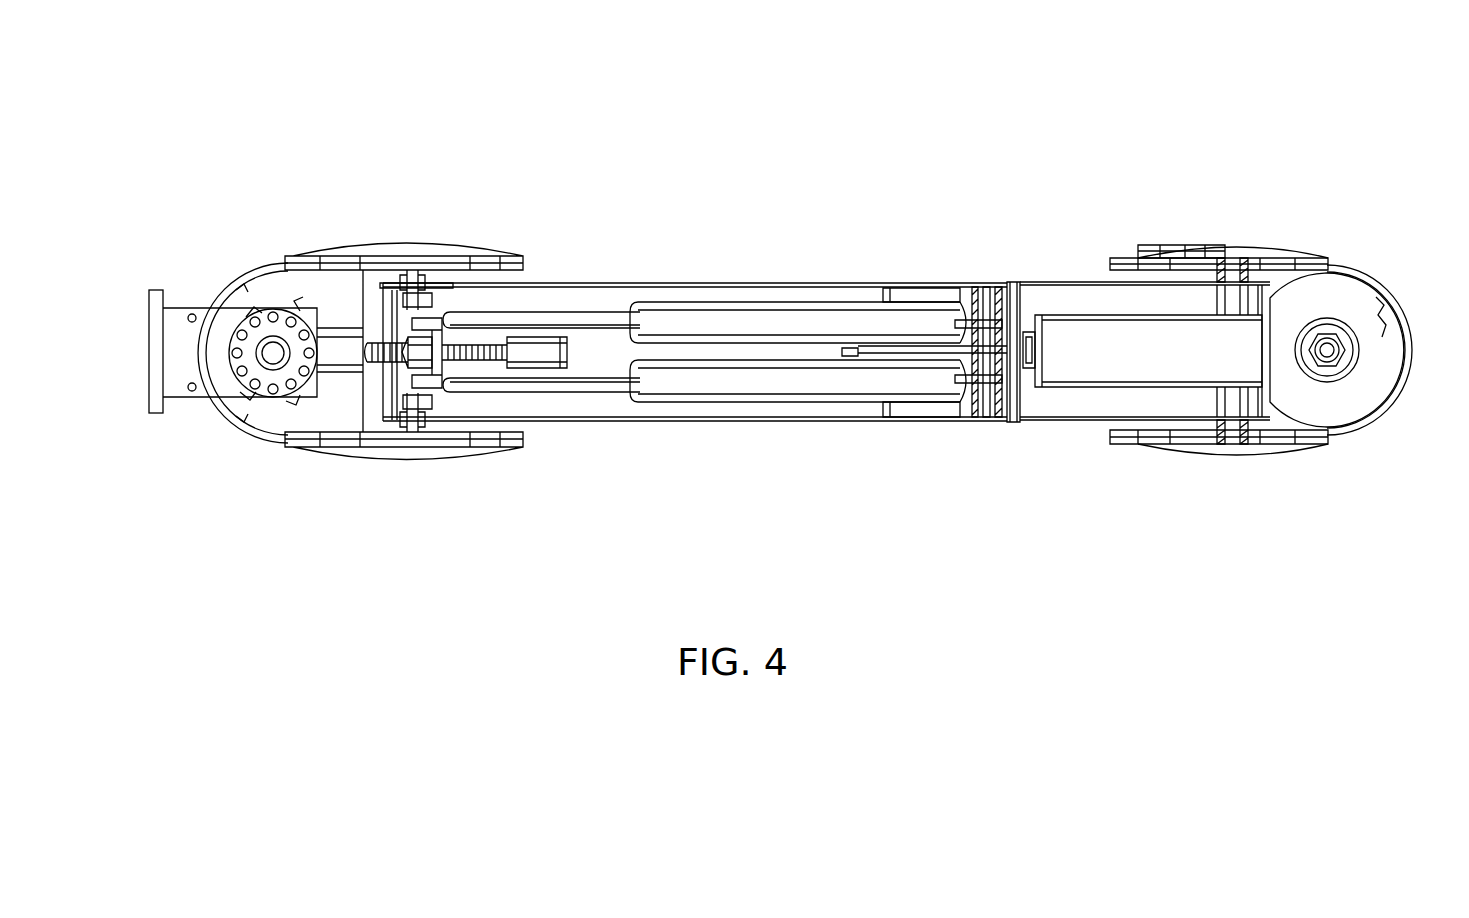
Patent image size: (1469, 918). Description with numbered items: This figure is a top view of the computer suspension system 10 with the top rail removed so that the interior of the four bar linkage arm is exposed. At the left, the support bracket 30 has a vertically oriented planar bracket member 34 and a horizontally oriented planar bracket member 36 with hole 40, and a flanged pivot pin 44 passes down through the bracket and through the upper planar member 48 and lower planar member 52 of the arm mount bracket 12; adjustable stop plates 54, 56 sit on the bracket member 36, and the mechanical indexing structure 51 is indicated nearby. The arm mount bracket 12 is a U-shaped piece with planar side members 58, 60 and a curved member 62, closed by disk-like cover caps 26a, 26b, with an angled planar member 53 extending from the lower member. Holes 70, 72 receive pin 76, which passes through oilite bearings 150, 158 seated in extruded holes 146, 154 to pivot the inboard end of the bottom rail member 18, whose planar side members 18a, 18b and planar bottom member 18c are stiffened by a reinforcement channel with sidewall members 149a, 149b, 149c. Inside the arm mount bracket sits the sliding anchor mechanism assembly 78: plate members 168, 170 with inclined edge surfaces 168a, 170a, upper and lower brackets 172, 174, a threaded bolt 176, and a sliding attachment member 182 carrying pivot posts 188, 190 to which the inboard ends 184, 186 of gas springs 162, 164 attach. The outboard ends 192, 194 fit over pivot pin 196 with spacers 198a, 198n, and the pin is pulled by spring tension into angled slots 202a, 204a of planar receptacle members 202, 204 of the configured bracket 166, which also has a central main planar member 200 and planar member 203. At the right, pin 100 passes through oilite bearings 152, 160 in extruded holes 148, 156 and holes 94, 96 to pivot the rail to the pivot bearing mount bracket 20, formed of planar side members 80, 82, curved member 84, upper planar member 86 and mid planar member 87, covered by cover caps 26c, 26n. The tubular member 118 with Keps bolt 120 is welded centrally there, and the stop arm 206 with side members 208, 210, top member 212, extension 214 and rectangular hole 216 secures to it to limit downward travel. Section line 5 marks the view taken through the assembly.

The section line 5 is at (1428, 353).
The computer suspension system 10 is at (1226, 52).
The arm mount bracket 12 is at (341, 135).
The bottom rail member 18 is at (714, 225).
The planar side member 18a is at (598, 420).
The planar side member 18b is at (572, 300).
The planar bottom member 18c is at (625, 310).
The pivot bearing mount bracket 20 is at (1347, 195).
The cover cap 26a is at (375, 447).
The cover cap 26b is at (345, 262).
The cover cap 26c is at (1280, 253).
The cover cap 26n is at (1283, 450).
The support bracket 30 is at (144, 452).
The planar bracket member 34 is at (158, 290).
The planar bracket member 36 is at (186, 300).
The hole 40 is at (262, 360).
The pivot pin 44 is at (270, 352).
The upper planar member 48 is at (232, 405).
The mechanical indexing structure 51 is at (232, 250).
The lower planar member 52 is at (237, 435).
The angled planar member 53 is at (360, 320).
The adjustable stop plate 54 is at (290, 305).
The adjustable stop plate 56 is at (283, 400).
The planar side member 58 is at (505, 395).
The planar side member 60 is at (522, 272).
The curved member 62 is at (245, 418).
The hole 70 is at (410, 432).
The hole 72 is at (415, 270).
The pin 76 is at (410, 290).
The sliding anchor mechanism assembly 78 is at (495, 302).
The planar side member 80 is at (1112, 437).
The planar side member 82 is at (1113, 268).
The curved member 84 is at (1382, 413).
The upper planar member 86 is at (1378, 302).
The mid planar member 87 is at (1352, 293).
The hole 94 is at (1240, 450).
The hole 96 is at (1238, 267).
The pin 100 is at (1232, 305).
The tubular member 118 is at (1357, 355).
The Keps bolt 120 is at (1332, 363).
The extruded hole 146 is at (393, 435).
The extruded hole 148 is at (1217, 388).
The planar sidewall member 149a is at (997, 400).
The planar sidewall member 149b is at (893, 292).
The planar sidewall member 149c is at (885, 400).
The oilite bearing 150 is at (405, 432).
The oilite bearing 152 is at (1217, 440).
The extruded hole 154 is at (435, 318).
The extruded hole 156 is at (1218, 290).
The oilite bearing 158 is at (430, 330).
The oilite bearing 160 is at (1218, 267).
The gas spring 162 is at (770, 385).
The gas spring 164 is at (790, 315).
The configured bracket 166 is at (1007, 260).
The plate member 168 is at (320, 380).
The inclined edge surface 168a is at (345, 370).
The plate member 170 is at (366, 337).
The inclined edge surface 170a is at (352, 300).
The upper bracket 172 is at (395, 400).
The lower bracket 174 is at (503, 340).
The threaded bolt 176 is at (460, 380).
The sliding attachment member 182 is at (445, 400).
The inboard end 184 is at (450, 405).
The inboard end 186 is at (450, 340).
The pivot post 188 is at (455, 410).
The pivot post 190 is at (440, 335).
The outboard end 192 is at (990, 418).
The outboard end 194 is at (962, 300).
The pivot pin 196 is at (998, 300).
The spacer 198a is at (985, 400).
The spacer 198n is at (985, 295).
The central main planar member 200 is at (1015, 295).
The planar receptacle member 202 is at (975, 400).
The angled slot 202a is at (987, 442).
The planar member 203 is at (855, 347).
The planar receptacle member 204 is at (918, 292).
The angled slot 204a is at (984, 240).
The stop arm 206 is at (1148, 351).
The side member 208 is at (1128, 385).
The side member 210 is at (1152, 317).
The top member 212 is at (1103, 365).
The extension 214 is at (1023, 333).
The rectangular hole 216 is at (1028, 360).